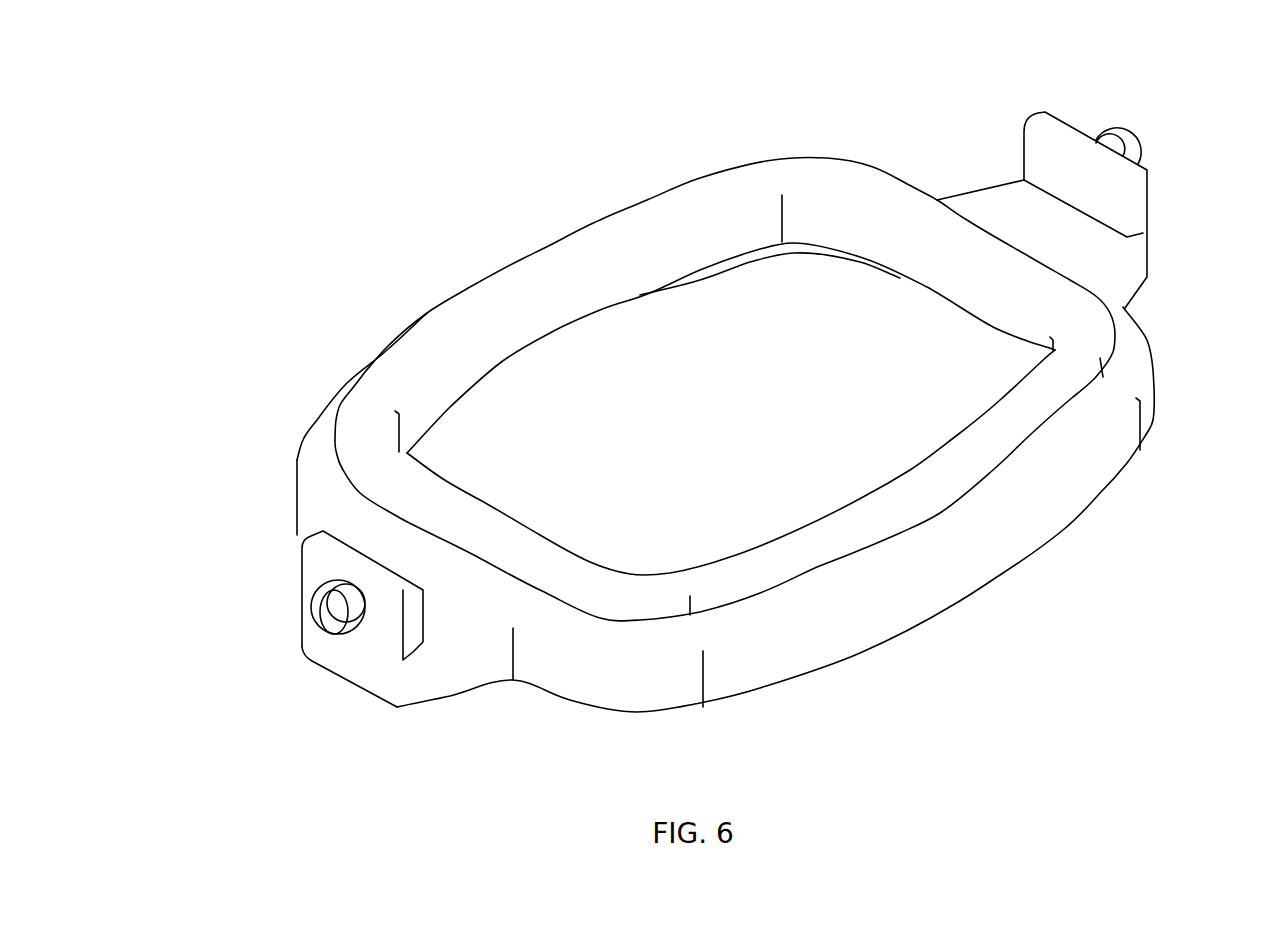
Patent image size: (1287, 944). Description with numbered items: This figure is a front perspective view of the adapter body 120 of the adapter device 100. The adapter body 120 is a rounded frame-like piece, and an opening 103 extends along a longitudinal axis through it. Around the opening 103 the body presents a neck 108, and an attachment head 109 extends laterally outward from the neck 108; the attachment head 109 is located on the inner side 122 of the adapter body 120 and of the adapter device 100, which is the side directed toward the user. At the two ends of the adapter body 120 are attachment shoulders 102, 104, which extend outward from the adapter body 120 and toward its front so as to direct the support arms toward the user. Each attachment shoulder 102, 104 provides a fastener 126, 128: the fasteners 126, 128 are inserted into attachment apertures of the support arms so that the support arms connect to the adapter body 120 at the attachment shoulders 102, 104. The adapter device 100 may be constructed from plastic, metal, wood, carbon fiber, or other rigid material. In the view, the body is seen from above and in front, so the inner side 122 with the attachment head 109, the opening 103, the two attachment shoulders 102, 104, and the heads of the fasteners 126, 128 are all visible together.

The adapter device 100 is at (1025, 525).
The attachment shoulder 102 is at (1140, 262).
The opening 103 is at (743, 385).
The attachment shoulder 104 is at (388, 688).
The neck 108 is at (332, 430).
The attachment head 109 is at (535, 283).
The adapter body 120 is at (937, 582).
The inner side 122 is at (598, 595).
The fastener 126 is at (315, 612).
The fastener 128 is at (1125, 135).